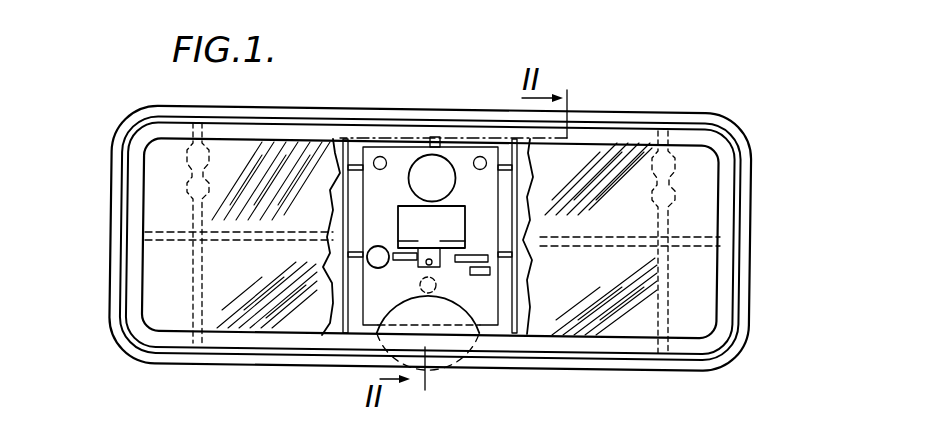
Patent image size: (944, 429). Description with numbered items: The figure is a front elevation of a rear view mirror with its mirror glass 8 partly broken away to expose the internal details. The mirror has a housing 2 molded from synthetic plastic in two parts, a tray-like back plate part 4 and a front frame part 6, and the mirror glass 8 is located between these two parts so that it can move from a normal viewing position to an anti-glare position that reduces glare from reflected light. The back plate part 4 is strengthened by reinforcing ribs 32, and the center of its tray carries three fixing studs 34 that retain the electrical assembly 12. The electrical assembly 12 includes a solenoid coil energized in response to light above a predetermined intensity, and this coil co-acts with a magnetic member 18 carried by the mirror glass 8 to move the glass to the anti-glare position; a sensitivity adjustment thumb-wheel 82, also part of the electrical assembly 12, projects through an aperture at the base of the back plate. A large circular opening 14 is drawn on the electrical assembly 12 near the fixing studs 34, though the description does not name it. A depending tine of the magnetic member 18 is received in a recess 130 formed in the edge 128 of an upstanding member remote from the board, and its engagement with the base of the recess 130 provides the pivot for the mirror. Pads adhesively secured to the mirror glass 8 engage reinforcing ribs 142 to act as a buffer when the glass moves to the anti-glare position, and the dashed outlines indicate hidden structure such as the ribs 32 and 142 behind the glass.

The housing 2 is at (208, 98).
The back plate part 4 is at (152, 365).
The front frame part 6 is at (133, 352).
The mirror glass 8 is at (158, 292).
The electrical assembly 12 is at (403, 143).
The lamp aperture 14 is at (416, 158).
The magnetic member 18 is at (431, 236).
The reinforcing ribs 32 is at (338, 206).
The fixing studs 34 is at (378, 156).
The sensitivity adjustment thumb-wheel 82 is at (432, 375).
The edge of upstanding member 128 is at (440, 236).
The recess 130 is at (412, 236).
The reinforcing ribs 142 is at (207, 158).